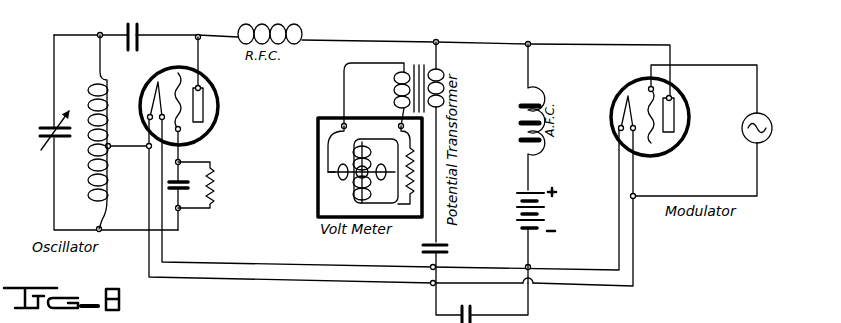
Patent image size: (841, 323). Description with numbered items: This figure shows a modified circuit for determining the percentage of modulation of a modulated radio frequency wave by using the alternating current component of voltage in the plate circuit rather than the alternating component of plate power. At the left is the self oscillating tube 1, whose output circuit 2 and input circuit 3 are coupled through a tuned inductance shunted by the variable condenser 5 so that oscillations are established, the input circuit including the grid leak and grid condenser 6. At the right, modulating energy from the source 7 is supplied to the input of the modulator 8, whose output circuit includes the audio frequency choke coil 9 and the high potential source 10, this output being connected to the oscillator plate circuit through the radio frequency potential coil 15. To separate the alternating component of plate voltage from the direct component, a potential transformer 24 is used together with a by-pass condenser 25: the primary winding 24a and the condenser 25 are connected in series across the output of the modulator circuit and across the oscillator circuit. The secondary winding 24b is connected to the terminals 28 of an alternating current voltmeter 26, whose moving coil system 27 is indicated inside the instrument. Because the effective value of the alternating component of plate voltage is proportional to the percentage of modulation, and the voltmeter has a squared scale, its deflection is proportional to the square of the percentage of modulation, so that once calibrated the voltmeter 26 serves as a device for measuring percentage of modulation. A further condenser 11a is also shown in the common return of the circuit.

The oscillating tube 1 is at (222, 106).
The output circuit 2 is at (128, 51).
The input circuit 3 is at (166, 217).
The variable condenser 5 is at (36, 132).
The grid leak and grid condenser 6 is at (192, 188).
The source 7 is at (772, 118).
The modulator 8 is at (693, 117).
The audio frequency choke coil 9 is at (532, 96).
The high potential source 10 is at (552, 212).
The condenser 11a is at (458, 307).
The radio frequency potential coil 15 is at (242, 31).
The potential transformer 24 is at (423, 129).
The primary winding 24a is at (439, 77).
The secondary winding 24b is at (397, 73).
The by-pass condenser 25 is at (450, 250).
The voltmeter 26 is at (350, 160).
The moving coil system 27 is at (330, 171).
The terminals 28 is at (392, 120).